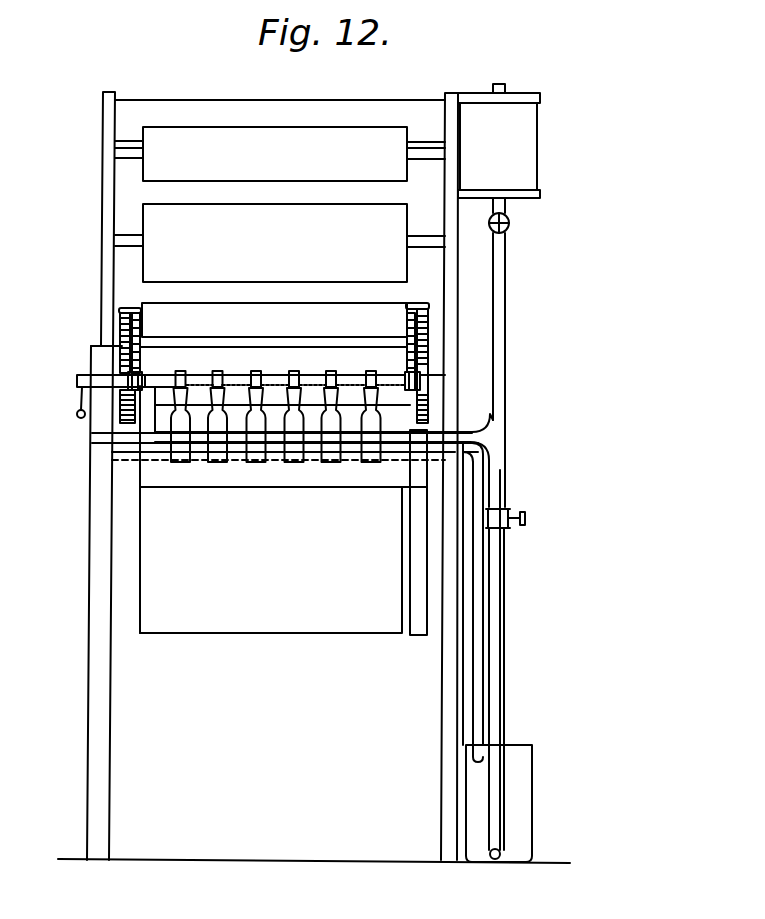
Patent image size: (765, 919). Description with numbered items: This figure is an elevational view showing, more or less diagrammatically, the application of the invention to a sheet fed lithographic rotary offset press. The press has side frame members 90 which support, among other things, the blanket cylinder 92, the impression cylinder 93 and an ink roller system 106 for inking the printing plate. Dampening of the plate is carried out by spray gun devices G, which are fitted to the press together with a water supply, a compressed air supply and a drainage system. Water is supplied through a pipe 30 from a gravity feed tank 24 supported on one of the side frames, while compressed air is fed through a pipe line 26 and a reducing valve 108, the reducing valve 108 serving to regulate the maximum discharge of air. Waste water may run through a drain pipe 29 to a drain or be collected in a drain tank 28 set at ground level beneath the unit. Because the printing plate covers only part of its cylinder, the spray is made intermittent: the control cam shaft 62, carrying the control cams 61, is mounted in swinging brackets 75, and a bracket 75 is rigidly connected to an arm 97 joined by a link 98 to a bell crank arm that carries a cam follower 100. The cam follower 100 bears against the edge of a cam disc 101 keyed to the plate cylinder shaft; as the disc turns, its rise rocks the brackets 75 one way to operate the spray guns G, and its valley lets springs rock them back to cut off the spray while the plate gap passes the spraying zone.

The gravity feed tank 24 is at (515, 158).
The pipe line 26 is at (497, 636).
The drain tank 28 is at (512, 814).
The drain pipe 29 is at (480, 573).
The pipe 30 is at (501, 269).
The control cams 61 is at (276, 434).
The control cam shaft 62 is at (310, 376).
The swinging brackets 75 is at (142, 372).
The side frame members 90 is at (448, 806).
The blanket cylinder 92 is at (150, 472).
The impression cylinder 93 is at (304, 618).
The arm 97 is at (143, 324).
The link 98 is at (120, 322).
The cam follower 100 is at (120, 357).
The cam disc 101 is at (120, 417).
The ink roller system 106 is at (313, 123).
The reducing valve 108 is at (514, 510).
The spray gun devices G is at (314, 434).